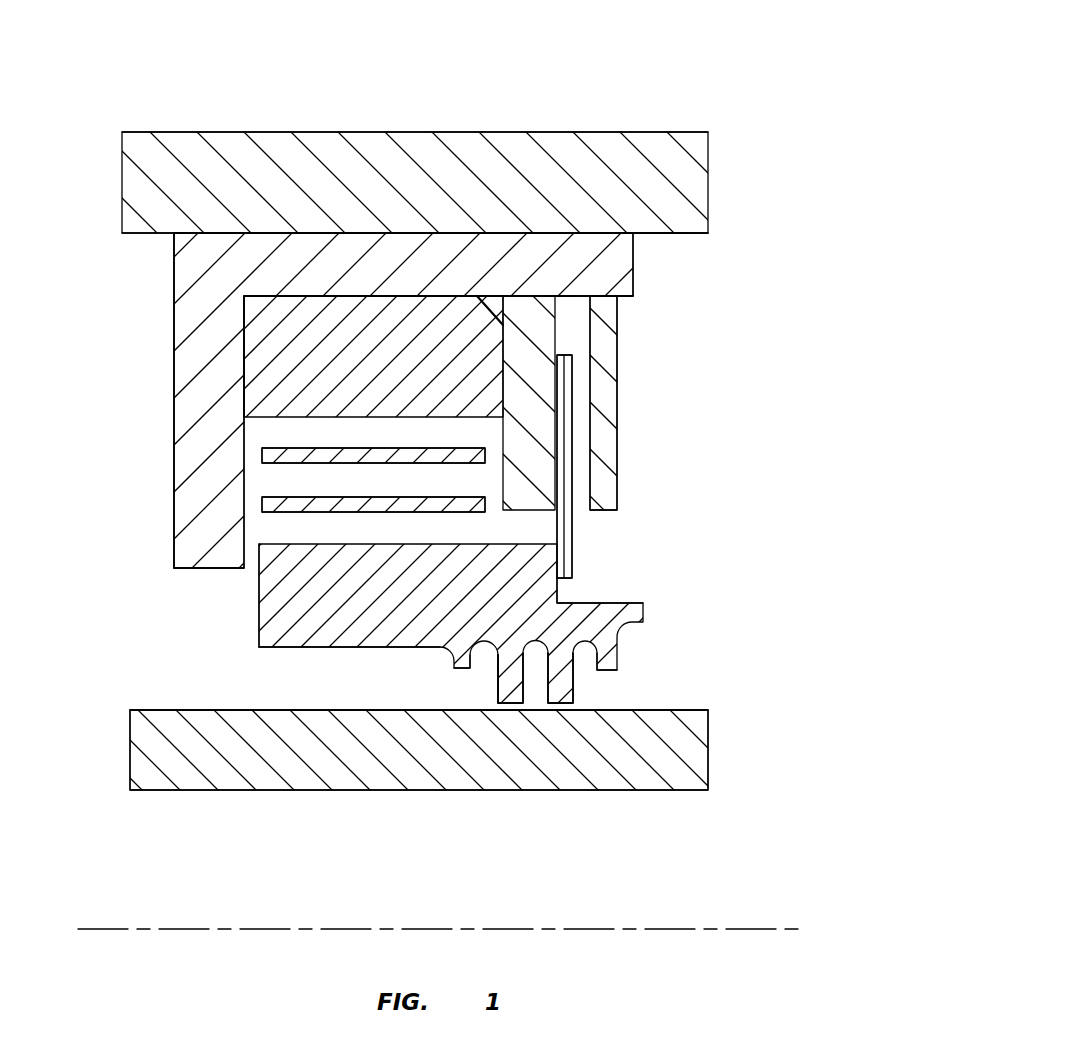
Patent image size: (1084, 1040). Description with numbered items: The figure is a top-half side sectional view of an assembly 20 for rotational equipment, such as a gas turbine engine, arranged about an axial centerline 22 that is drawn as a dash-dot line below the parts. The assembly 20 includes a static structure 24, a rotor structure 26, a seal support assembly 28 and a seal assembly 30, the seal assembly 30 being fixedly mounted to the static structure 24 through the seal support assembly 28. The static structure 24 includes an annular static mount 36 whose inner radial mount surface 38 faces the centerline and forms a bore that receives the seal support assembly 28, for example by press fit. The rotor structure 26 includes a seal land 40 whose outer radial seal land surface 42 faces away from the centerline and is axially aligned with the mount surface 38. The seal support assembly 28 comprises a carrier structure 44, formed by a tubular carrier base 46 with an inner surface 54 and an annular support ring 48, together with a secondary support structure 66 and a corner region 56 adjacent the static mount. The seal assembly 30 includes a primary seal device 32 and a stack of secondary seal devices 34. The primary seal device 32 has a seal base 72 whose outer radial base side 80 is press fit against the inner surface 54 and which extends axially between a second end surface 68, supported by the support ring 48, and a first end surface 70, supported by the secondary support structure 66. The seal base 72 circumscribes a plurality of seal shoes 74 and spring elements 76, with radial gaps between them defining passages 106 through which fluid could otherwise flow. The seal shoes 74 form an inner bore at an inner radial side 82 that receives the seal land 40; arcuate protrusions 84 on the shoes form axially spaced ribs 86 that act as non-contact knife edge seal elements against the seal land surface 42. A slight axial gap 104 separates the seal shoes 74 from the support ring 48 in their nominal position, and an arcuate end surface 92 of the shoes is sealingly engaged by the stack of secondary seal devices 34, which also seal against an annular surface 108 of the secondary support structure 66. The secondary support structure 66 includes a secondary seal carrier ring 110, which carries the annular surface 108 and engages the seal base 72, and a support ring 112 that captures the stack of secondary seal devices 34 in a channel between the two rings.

The assembly 20 is at (750, 82).
The axial centerline 22 is at (780, 929).
The static structure 24 is at (714, 150).
The rotor structure 26 is at (718, 762).
The seal support assembly 28 is at (650, 318).
The seal assembly 30 is at (246, 628).
The primary seal device 32 is at (252, 603).
The secondary seal devices 34 is at (573, 553).
The static mount 36 is at (638, 132).
The inner radial mount surface 38 is at (690, 235).
The seal land 40 is at (710, 721).
The outer radial seal land surface 42 is at (697, 710).
The carrier structure 44 is at (166, 372).
The carrier base 46 is at (393, 232).
The support ring 48 is at (174, 452).
The inner surface 54 is at (627, 302).
The upper corner 56 is at (634, 230).
The secondary support structure 66 is at (628, 375).
The second end surface 68 is at (243, 340).
The first end surface 70 is at (503, 345).
The seal base 72 is at (243, 397).
The seal shoes 74 is at (257, 646).
The spring elements 76 is at (262, 505).
The outer radial base side 80 is at (310, 295).
The inner radial side 82 is at (486, 700).
The arcuate protrusions 84 is at (455, 670).
The ribs 86 is at (610, 672).
The arcuate end surface 92 is at (559, 593).
The axial gap 104 is at (252, 557).
The passages 106 is at (396, 443).
The annular surface 108 is at (557, 436).
The secondary seal carrier ring 110 is at (560, 295).
The support ring 112 is at (605, 295).